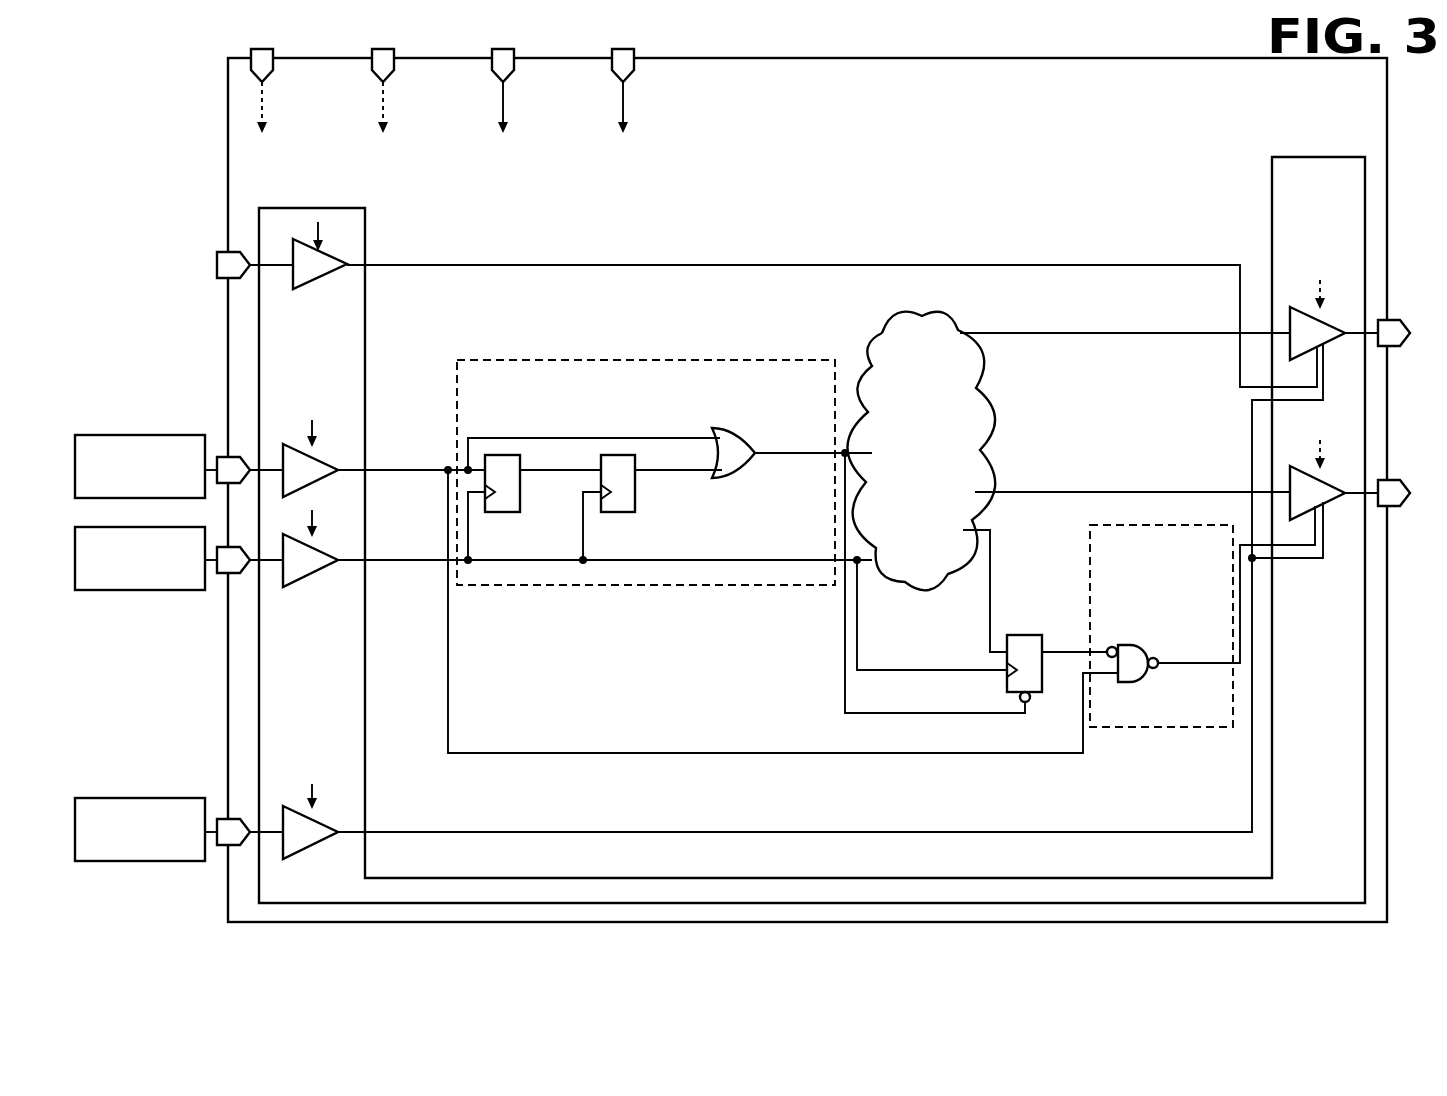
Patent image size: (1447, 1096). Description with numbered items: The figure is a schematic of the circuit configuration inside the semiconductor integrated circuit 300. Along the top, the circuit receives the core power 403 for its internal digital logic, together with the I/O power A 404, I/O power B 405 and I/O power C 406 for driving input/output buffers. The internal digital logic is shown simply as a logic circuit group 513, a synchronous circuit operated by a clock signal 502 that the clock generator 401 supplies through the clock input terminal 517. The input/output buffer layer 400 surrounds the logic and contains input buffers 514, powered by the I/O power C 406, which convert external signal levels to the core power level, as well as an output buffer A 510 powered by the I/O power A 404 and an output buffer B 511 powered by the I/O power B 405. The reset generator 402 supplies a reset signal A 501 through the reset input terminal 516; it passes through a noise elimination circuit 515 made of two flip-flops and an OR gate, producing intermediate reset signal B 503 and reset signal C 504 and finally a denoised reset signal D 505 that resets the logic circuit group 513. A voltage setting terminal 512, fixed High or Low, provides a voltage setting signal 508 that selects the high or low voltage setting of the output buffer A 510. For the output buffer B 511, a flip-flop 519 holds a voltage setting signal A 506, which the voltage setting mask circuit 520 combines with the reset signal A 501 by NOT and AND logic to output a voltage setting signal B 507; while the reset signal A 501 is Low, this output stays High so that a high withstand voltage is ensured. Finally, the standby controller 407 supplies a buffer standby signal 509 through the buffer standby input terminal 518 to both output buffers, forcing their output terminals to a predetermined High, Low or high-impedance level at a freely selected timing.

The semiconductor integrated circuit 300 is at (1005, 58).
The input/output buffer layer 400 is at (1305, 157).
The clock generator 401 is at (100, 590).
The reset generator 402 is at (100, 435).
The core power 403 is at (626, 100).
The I/O power A 404 is at (266, 100).
The I/O power B 405 is at (386, 100).
The I/O power C 406 is at (506, 100).
The standby controller 407 is at (100, 798).
The reset signal A 501 is at (400, 473).
The clock signal 502 is at (400, 563).
The reset signal B 503 is at (552, 475).
The reset signal C 504 is at (672, 475).
The reset signal D 505 is at (773, 458).
The voltage setting signal A for the I/O power supplied to output buffer B 506 is at (1064, 650).
The voltage setting signal B for the I/O power supplied to output buffer B 507 is at (1202, 665).
The voltage setting signal for the I/O power supplied to output buffer A 508 is at (438, 264).
The buffer standby signal 509 is at (628, 831).
The output buffer A 510 is at (1330, 345).
The output buffer B 511 is at (1330, 506).
The voltage setting terminal 512 is at (217, 255).
The logic circuit group 513 is at (875, 330).
The input buffer 514 is at (299, 258).
The noise elimination circuit 515 is at (650, 360).
The reset input terminal 516 is at (220, 457).
The clock input terminal 517 is at (222, 573).
The buffer standby input terminal 518 is at (220, 819).
The flip-flop 519 is at (1032, 704).
The voltage setting mask circuit 520 is at (1088, 546).